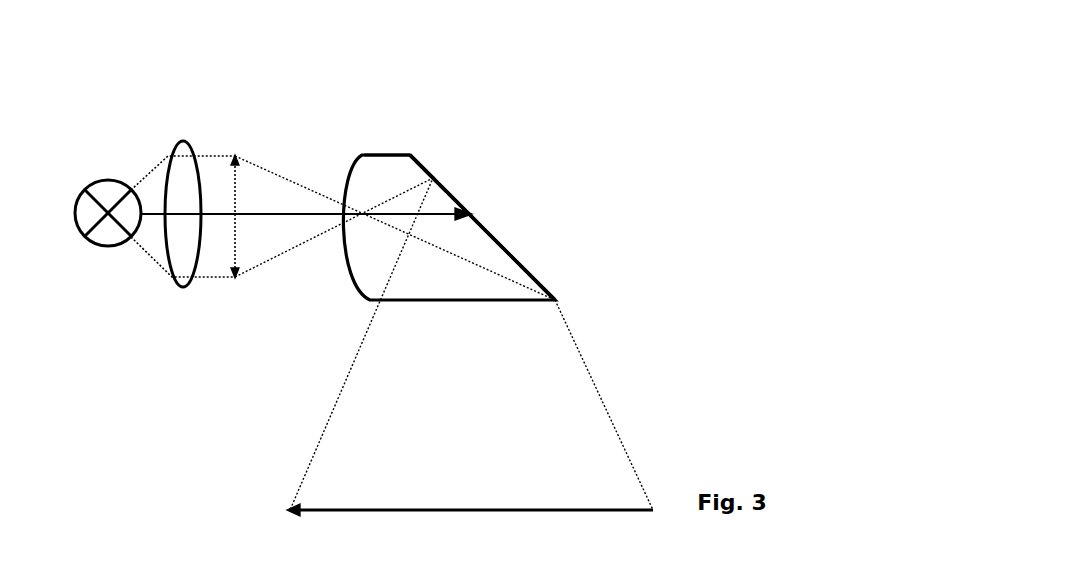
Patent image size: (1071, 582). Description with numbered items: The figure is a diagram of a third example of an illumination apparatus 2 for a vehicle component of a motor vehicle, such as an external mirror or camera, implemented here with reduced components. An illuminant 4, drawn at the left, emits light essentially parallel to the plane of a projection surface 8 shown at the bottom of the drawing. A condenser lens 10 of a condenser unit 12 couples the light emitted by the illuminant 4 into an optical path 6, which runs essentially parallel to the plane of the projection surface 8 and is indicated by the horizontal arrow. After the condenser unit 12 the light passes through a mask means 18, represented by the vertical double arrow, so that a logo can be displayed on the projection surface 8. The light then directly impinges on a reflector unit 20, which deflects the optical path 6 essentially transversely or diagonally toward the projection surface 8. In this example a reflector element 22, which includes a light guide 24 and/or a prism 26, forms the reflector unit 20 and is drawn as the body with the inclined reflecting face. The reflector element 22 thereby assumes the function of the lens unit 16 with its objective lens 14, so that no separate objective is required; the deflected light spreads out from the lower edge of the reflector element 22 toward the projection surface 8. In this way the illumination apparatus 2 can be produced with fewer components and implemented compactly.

The illumination apparatus 2 is at (118, 112).
The illuminant 4 is at (75, 215).
The optical path 6 is at (265, 212).
The projection surface 8 is at (545, 511).
The condenser lens 10 is at (190, 143).
The condenser unit 12 is at (161, 303).
The objective lens 14 is at (390, 153).
The lens unit 16 is at (529, 302).
The mask means 18 is at (240, 228).
The reflector unit 20 is at (515, 260).
The reflector element 22 is at (482, 227).
The light guide 24 is at (482, 227).
The prism 26 is at (538, 152).